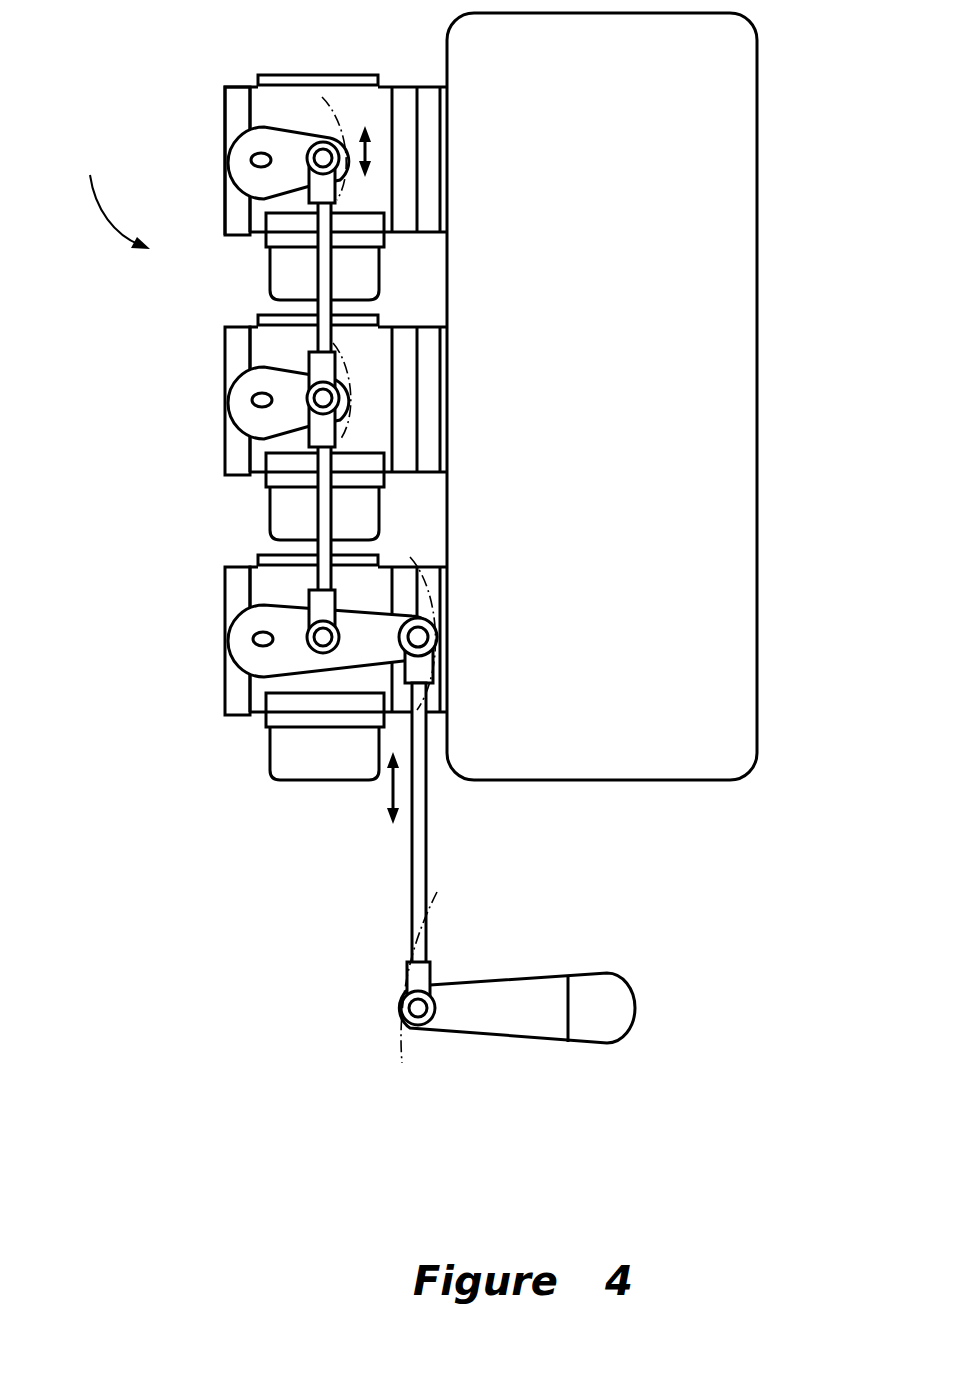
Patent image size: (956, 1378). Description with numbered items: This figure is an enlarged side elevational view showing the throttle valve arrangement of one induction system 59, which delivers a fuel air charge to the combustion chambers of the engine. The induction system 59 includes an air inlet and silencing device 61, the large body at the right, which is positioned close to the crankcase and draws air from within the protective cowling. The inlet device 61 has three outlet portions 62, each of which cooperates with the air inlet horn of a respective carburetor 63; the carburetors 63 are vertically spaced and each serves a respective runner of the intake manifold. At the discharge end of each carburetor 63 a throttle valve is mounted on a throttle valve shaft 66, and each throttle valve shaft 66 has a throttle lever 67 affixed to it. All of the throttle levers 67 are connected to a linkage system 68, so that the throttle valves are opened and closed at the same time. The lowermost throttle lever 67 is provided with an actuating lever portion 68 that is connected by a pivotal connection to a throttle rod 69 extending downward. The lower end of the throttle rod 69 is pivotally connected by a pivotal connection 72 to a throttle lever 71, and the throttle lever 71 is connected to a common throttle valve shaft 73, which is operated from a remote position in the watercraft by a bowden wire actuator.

The induction system 59 is at (107, 192).
The air inlet and silencing device 61 is at (758, 178).
The outlet portion 62 is at (434, 87).
The carburetor 63 is at (316, 72).
The throttle valve shaft 66 is at (262, 148).
The throttle lever 67 is at (238, 167).
The linkage system 68 is at (322, 272).
The throttle rod 69 is at (420, 825).
The throttle lever 71 is at (502, 1020).
The pivotal connection 72 is at (400, 1010).
The throttle valve shaft 73 is at (603, 972).